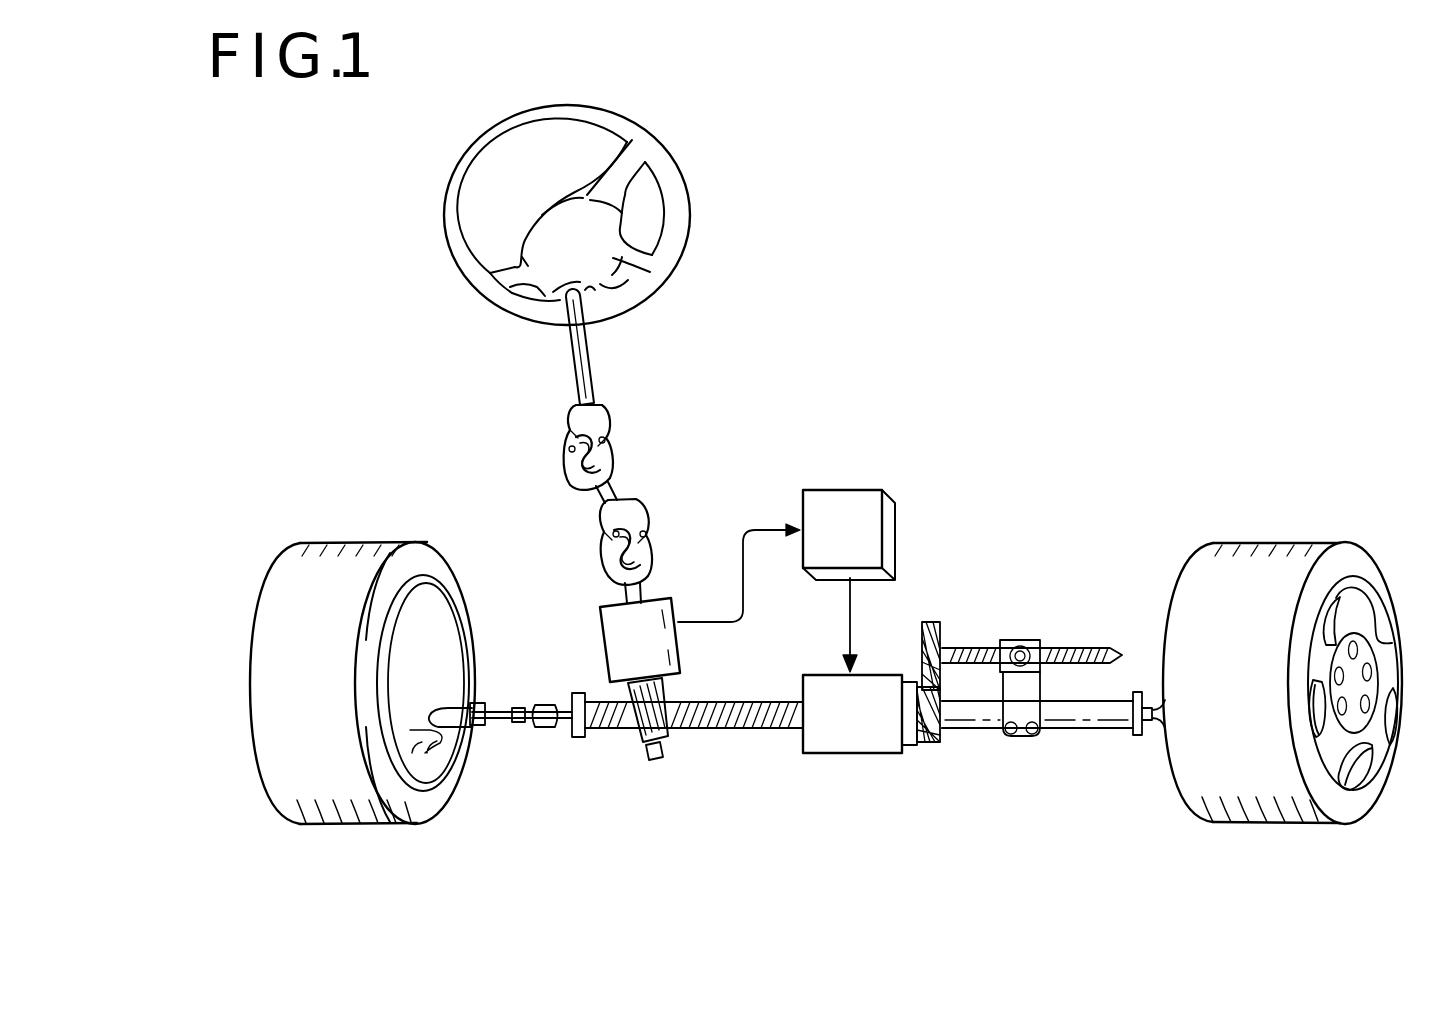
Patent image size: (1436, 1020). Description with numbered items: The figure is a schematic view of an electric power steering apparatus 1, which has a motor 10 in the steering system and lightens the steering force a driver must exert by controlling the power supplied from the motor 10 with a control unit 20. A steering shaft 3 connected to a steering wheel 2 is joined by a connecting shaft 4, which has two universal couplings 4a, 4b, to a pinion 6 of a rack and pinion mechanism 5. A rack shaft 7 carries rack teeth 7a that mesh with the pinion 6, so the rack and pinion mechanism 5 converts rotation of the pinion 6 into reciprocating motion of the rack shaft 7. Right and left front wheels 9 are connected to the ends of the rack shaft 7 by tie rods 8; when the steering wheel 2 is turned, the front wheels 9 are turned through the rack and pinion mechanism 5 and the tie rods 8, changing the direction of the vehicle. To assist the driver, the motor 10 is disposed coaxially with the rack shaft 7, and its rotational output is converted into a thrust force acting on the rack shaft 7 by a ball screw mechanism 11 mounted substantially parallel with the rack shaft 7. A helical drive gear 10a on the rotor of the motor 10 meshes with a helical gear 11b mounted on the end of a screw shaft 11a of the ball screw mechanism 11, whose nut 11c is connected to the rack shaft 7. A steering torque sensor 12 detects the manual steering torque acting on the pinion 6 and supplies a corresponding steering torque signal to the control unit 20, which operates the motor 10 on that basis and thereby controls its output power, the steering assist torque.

The electric power steering apparatus 1 is at (1022, 218).
The steering wheel 2 is at (470, 173).
The steering shaft 3 is at (590, 358).
The connecting shaft 4 is at (614, 490).
The universal coupling 4a is at (607, 418).
The universal coupling 4b is at (632, 512).
The rack and pinion mechanism 5 is at (694, 789).
The pinion 6 is at (637, 756).
The rack shaft 7 is at (757, 730).
The rack teeth 7a is at (703, 730).
The tie rod 8 is at (503, 737).
The front wheel 9 is at (352, 826).
The motor 10 is at (850, 755).
The helical drive gear 10a is at (930, 745).
The ball screw mechanism 11 is at (1135, 543).
The screw shaft 11a is at (1090, 645).
The helical gear 11b is at (940, 620).
The nut 11c is at (1035, 640).
The steering torque sensor 12 is at (600, 633).
The control unit 20 is at (850, 490).